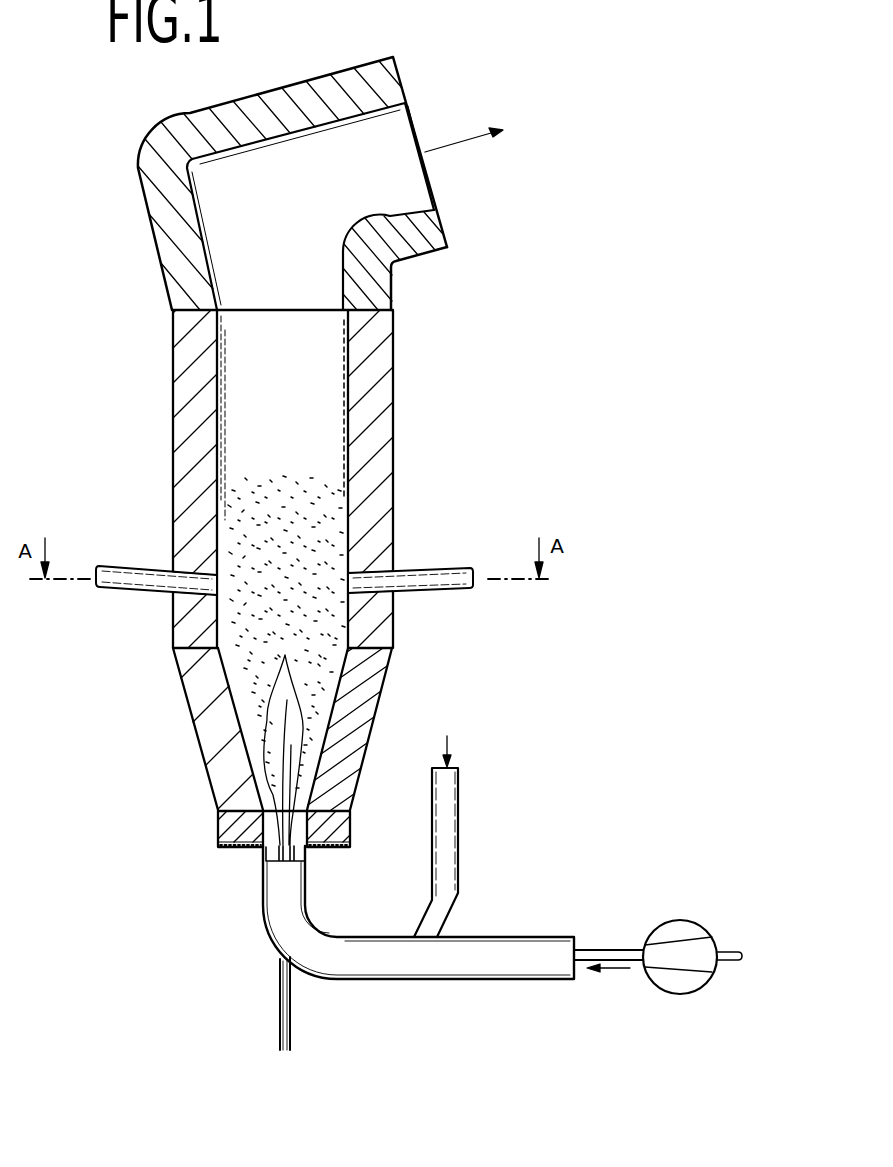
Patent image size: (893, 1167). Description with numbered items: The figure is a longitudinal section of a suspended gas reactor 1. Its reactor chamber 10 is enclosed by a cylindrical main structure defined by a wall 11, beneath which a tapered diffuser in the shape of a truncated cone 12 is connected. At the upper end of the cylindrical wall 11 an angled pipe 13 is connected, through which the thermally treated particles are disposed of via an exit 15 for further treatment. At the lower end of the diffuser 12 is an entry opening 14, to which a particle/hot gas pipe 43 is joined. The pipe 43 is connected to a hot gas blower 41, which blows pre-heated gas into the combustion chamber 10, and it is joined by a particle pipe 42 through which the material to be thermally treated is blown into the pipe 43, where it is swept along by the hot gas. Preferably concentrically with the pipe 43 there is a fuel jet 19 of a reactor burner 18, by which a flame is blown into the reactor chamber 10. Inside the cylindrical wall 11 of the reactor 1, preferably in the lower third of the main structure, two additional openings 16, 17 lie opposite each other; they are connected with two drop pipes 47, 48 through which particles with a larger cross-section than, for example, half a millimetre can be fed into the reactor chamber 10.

The suspended gas reactor 1 is at (480, 363).
The reactor chamber 10 is at (305, 457).
The wall 11 is at (383, 490).
The truncated cone 12 is at (212, 752).
The angled pipe 13 is at (425, 243).
The entry opening 14 is at (250, 848).
The exit 15 is at (414, 183).
The opening 16 is at (217, 583).
The opening 17 is at (357, 575).
The reactor burner 18 is at (282, 972).
The fuel jet 19 is at (307, 850).
The hot gas blower 41 is at (672, 927).
The particle pipe 42 is at (452, 805).
The particle/hot gas pipe 43 is at (363, 960).
The drop pipe 47 is at (147, 578).
The drop pipe 48 is at (442, 578).